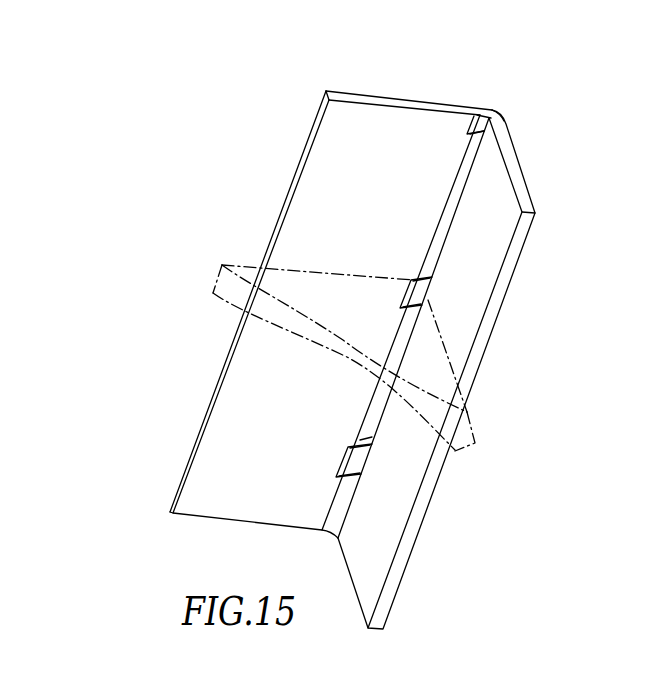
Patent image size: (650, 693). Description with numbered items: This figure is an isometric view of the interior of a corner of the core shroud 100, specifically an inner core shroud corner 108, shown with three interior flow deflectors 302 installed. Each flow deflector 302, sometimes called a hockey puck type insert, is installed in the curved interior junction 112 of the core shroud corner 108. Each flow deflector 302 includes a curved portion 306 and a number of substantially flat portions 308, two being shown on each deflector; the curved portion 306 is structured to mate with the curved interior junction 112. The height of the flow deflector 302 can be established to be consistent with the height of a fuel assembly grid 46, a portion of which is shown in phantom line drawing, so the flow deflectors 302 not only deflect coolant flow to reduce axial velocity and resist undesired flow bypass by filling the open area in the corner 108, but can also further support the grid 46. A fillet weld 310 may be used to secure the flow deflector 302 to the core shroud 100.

The core shroud 100 is at (146, 485).
The inner core shroud corner 108 is at (447, 165).
The interior junction 112 is at (498, 113).
The interior flow deflector 302 is at (468, 129).
The curved portion 306 is at (488, 114).
The substantially flat portion 308 is at (483, 133).
The fillet weld 310 is at (362, 416).
The fuel assembly grid 46 is at (238, 264).